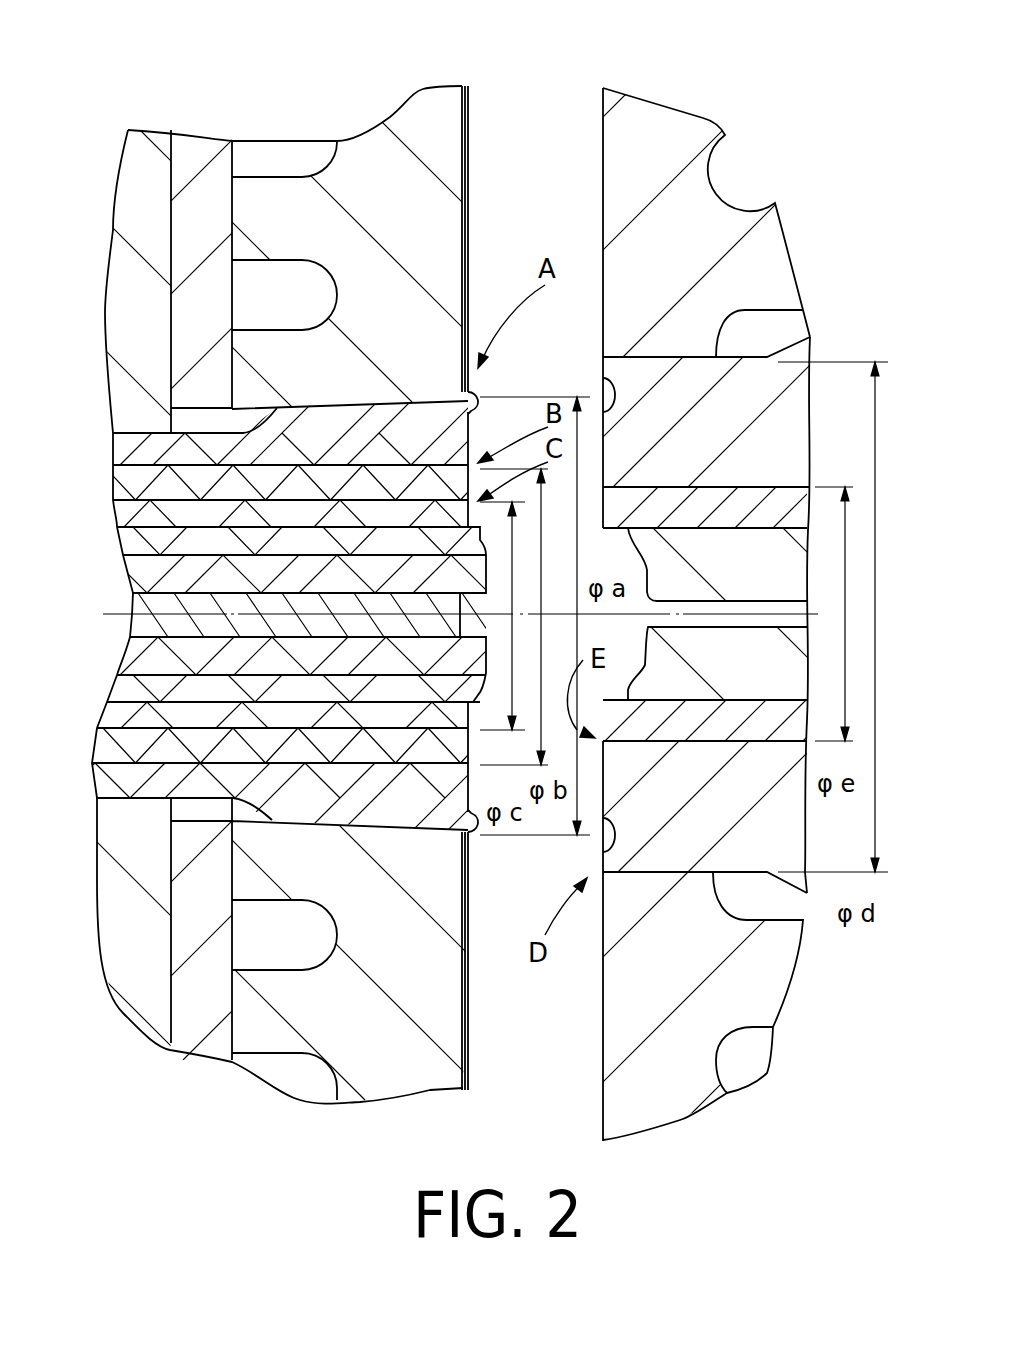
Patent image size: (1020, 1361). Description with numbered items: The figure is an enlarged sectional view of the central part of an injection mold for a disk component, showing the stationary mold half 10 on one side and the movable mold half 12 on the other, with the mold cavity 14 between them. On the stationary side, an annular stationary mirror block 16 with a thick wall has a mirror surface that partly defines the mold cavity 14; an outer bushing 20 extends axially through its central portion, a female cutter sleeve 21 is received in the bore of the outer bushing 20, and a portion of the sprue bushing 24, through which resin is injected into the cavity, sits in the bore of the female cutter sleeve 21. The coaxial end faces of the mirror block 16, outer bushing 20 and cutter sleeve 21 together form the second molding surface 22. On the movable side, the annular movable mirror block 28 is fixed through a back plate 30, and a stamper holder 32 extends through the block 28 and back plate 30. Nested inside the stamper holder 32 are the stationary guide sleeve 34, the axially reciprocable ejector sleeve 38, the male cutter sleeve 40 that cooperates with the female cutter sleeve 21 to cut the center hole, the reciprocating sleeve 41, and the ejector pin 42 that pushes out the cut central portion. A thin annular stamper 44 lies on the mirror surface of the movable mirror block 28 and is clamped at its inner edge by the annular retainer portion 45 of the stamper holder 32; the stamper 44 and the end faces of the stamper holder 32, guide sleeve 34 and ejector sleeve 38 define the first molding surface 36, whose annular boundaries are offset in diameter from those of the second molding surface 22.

The stationary mold half 10 is at (682, 85).
The movable mold half 12 is at (281, 80).
The mold cavity 14 is at (547, 103).
The stationary mirror block 16 is at (603, 1025).
The outer bushing 20 is at (738, 402).
The female cutter sleeve 21 is at (765, 725).
The second molding surface 22 is at (603, 213).
The sprue bushing 24 is at (768, 557).
The movable mirror block 28 is at (423, 1000).
The back plate 30 is at (193, 315).
The stamper holder 32 is at (318, 808).
The stationary guide sleeve 34 is at (118, 487).
The first molding surface 36 is at (473, 442).
The ejector sleeve 38 is at (122, 717).
The male cutter sleeve 40 is at (142, 543).
The reciprocating sleeve 41 is at (183, 573).
The ejector pin 42 is at (150, 622).
The stamper 44 is at (469, 150).
The annular retainer portion 45 is at (470, 840).